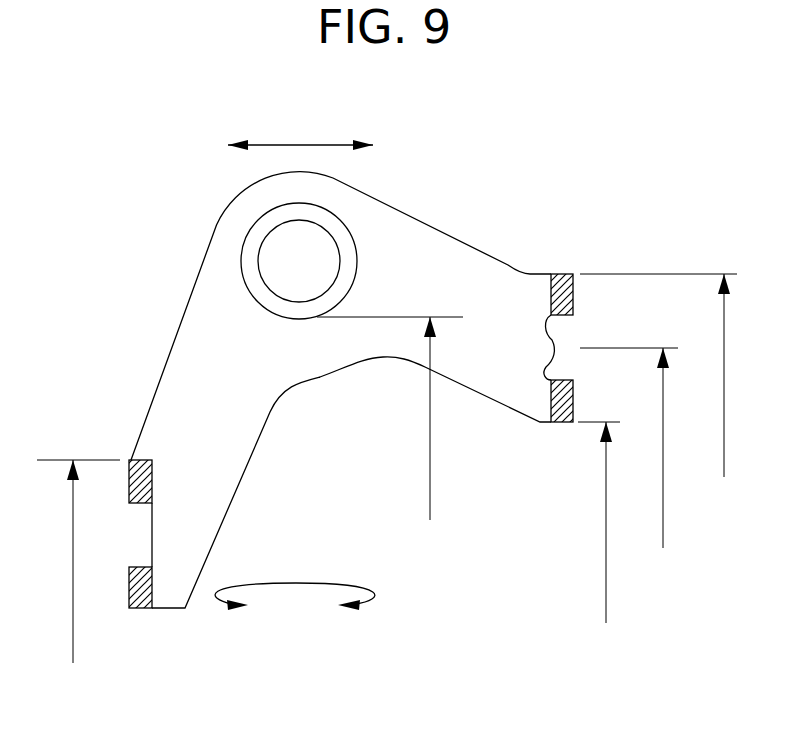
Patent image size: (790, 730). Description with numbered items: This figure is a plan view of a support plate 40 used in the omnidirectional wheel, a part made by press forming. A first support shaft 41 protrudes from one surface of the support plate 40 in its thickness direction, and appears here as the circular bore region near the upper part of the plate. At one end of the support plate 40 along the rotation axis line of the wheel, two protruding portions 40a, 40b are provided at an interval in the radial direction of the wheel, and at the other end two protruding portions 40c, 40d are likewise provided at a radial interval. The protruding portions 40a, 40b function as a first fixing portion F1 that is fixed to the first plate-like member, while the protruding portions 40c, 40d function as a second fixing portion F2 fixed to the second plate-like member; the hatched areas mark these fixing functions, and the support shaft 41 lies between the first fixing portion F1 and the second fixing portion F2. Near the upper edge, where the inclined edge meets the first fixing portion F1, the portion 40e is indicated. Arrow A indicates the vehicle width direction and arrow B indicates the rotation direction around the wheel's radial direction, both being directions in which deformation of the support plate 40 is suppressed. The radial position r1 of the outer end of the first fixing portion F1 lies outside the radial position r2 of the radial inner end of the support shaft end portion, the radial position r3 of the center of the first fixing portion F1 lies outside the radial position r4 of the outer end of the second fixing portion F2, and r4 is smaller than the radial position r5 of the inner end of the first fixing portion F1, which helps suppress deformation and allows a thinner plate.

The support plate 40 is at (433, 226).
The protruding portion 40a is at (562, 285).
The protruding portion 40b is at (562, 412).
The protruding portion 40c is at (138, 468).
The protruding portion 40d is at (138, 603).
The inclined portion of arm 40e is at (470, 273).
The first support shaft 41 is at (287, 252).
The first fixing portion F1 is at (548, 398).
The second fixing portion F2 is at (153, 585).
The arrow A is at (300, 131).
The arrow B is at (295, 579).
The radial directional position of outer end of first fixing portion r1 is at (658, 375).
The radial directional position of radial inner end of support-plate-side end portio r2 is at (390, 418).
The radial directional position of central position of first fixing portion r3 is at (629, 448).
The radial directional position of outer end of second fixing portion r4 is at (78, 561).
The radial directional position of inner end of first fixing portion r5 is at (596, 522).